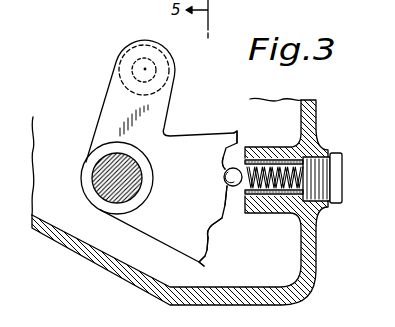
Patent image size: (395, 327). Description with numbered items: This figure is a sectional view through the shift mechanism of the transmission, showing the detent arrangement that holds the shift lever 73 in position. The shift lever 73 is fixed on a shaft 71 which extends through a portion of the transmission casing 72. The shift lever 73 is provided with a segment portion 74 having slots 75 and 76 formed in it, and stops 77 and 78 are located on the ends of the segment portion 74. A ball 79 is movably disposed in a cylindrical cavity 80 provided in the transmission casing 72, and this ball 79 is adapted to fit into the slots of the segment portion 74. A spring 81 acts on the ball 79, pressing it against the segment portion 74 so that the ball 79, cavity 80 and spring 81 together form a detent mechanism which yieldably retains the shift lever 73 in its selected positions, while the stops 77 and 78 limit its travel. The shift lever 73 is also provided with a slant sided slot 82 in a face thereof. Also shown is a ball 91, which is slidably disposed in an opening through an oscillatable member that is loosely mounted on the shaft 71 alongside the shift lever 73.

The shaft 71 is at (103, 176).
The transmission casing 72 is at (323, 325).
The shift lever 73 is at (107, 88).
The segment portion 74 is at (236, 228).
The slot 75 is at (223, 175).
The slot 76 is at (205, 236).
The stop 77 is at (242, 128).
The stop 78 is at (204, 266).
The ball 79 is at (222, 187).
The cylindrical cavity 80 is at (305, 173).
The spring 81 is at (284, 210).
The slant sided slot 82 is at (136, 44).
The ball 91 is at (167, 80).